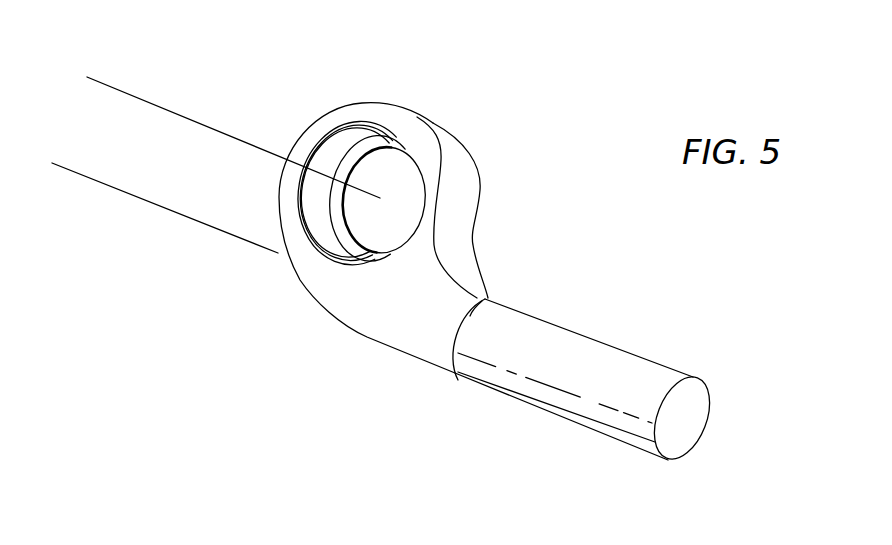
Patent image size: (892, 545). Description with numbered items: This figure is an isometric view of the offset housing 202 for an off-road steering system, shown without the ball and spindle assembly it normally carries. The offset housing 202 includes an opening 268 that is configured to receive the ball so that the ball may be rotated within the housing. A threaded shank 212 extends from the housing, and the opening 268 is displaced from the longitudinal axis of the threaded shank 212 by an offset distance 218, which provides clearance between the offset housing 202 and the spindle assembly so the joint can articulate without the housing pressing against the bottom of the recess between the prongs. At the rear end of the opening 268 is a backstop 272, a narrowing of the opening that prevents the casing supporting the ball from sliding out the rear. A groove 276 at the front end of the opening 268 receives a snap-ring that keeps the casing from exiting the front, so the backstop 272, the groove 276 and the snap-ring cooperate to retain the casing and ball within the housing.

The offset housing 202 is at (397, 325).
The threaded shank 212 is at (583, 357).
The offset distance 218 is at (112, 90).
The opening 268 is at (398, 175).
The backstop 272 is at (383, 143).
The groove 276 is at (337, 137).